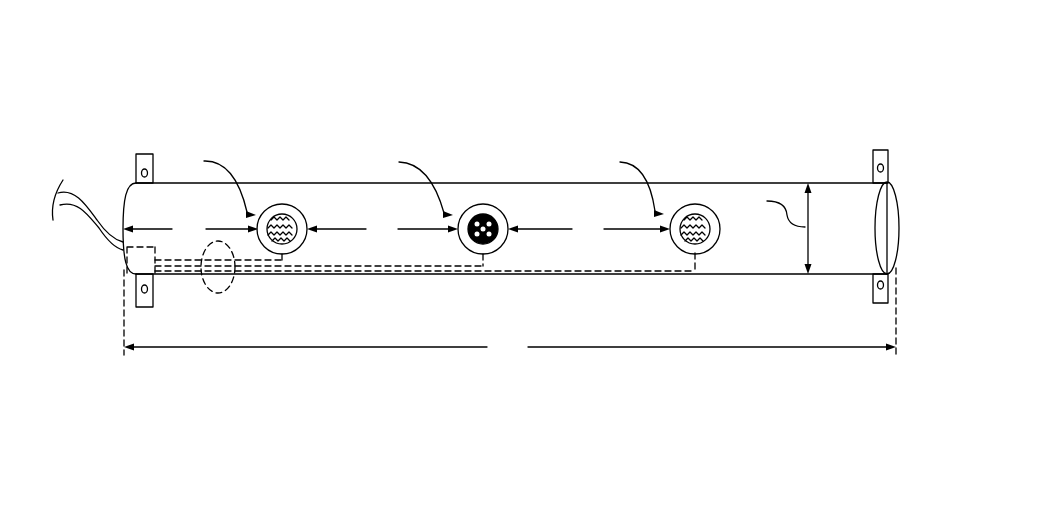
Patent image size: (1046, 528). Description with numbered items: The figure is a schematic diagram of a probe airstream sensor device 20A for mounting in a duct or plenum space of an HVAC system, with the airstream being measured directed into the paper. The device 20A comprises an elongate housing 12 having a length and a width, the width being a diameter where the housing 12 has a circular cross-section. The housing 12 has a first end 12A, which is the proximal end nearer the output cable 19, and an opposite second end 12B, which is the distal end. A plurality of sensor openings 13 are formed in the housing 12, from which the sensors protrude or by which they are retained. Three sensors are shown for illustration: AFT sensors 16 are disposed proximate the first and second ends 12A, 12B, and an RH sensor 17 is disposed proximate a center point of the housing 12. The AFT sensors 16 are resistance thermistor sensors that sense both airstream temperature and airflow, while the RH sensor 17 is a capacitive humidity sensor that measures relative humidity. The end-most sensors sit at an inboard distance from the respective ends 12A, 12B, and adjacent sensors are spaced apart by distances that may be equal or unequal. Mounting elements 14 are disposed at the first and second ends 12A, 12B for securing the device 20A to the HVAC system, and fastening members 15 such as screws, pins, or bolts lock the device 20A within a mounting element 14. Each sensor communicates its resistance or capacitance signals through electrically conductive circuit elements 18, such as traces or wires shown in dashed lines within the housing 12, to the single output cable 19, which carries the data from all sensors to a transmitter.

The housing 12 is at (333, 182).
The first end 12A is at (112, 286).
The second end 12B is at (908, 268).
The sensor openings 13 is at (288, 195).
The mounting elements 14 is at (136, 159).
The fastening members 15 is at (884, 168).
The AFT sensors 16 is at (283, 223).
The RH sensor 17 is at (498, 222).
The electrically conductive circuit elements 18 is at (226, 302).
The output cable 19 is at (88, 233).
The airstream sensor device 20A is at (236, 94).